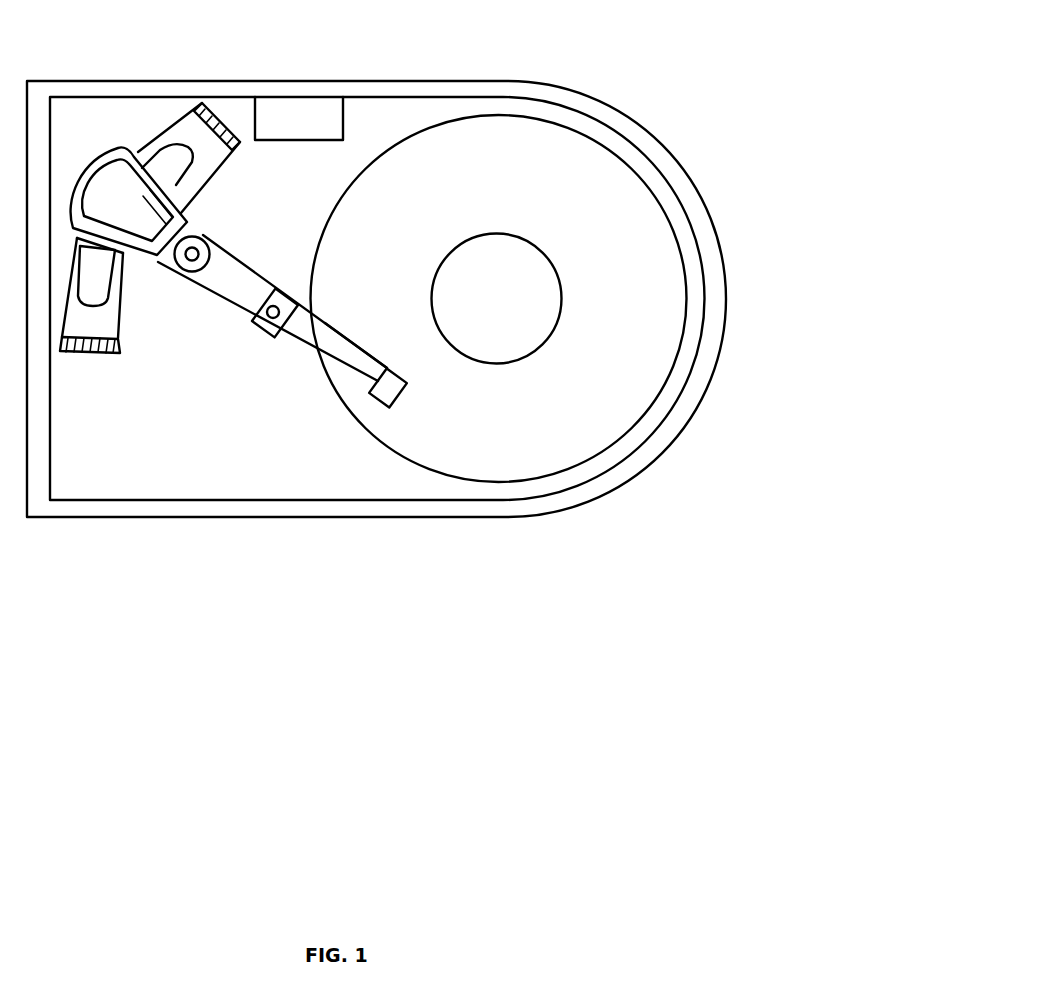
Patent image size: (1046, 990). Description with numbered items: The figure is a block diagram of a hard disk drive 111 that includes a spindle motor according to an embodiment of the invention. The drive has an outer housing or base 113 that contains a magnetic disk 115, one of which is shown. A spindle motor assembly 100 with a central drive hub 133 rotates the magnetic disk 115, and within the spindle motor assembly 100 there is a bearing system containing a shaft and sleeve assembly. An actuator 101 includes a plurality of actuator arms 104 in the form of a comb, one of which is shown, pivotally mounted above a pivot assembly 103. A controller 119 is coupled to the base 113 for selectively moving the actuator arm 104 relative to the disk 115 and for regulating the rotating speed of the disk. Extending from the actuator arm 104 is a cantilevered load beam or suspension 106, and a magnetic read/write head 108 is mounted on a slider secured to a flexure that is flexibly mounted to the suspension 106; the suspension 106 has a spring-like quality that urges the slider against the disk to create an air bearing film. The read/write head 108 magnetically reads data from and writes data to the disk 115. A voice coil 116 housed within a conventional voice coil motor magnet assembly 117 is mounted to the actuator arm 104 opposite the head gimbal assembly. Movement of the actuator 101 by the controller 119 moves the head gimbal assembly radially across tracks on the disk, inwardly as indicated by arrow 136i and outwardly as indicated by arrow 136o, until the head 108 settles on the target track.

The spindle motor assembly 100 is at (678, 231).
The actuator 101 is at (168, 425).
The pivot assembly 103 is at (203, 233).
The actuator arm 104 is at (240, 258).
The suspension 106 is at (325, 330).
The read/write head 108 is at (400, 396).
The hard disk drive 111 is at (631, 36).
The base 113 is at (383, 81).
The magnetic disk 115 is at (625, 217).
The voice coil 116 is at (88, 168).
The voice coil motor magnet assembly 117 is at (202, 139).
The controller 119 is at (300, 117).
The central drive hub 133 is at (489, 314).
The arrow indicating inward movement 136i is at (344, 388).
The arrow indicating outward movement 136o is at (328, 409).